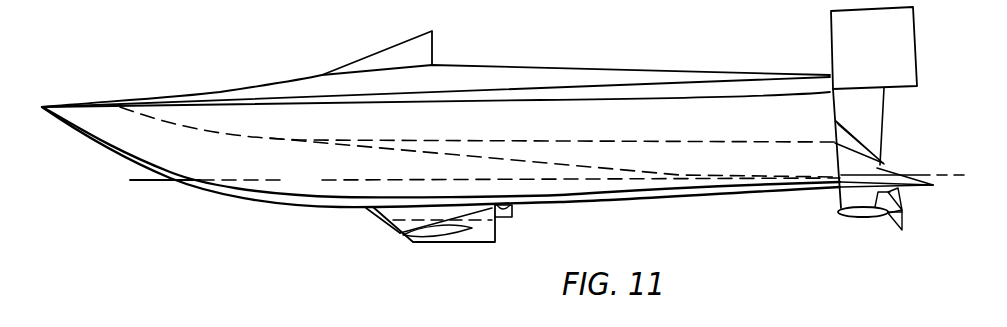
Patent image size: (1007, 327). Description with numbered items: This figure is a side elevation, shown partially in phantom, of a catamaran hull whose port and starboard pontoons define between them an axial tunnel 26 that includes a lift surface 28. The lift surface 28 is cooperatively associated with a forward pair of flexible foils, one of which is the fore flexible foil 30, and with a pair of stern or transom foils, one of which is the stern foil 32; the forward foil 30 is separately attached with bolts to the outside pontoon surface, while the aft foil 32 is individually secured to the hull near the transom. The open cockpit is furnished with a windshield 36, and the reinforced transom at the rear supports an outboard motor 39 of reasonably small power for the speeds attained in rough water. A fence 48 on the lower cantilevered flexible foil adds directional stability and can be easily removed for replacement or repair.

The axial tunnel 26 is at (316, 178).
The lift surface 28 is at (498, 139).
The fore flexible foil 30 is at (500, 218).
The stern or transom foil 32 is at (878, 168).
The windshield 36 is at (396, 57).
The outboard motor 39 is at (857, 68).
The fence 48 is at (405, 232).